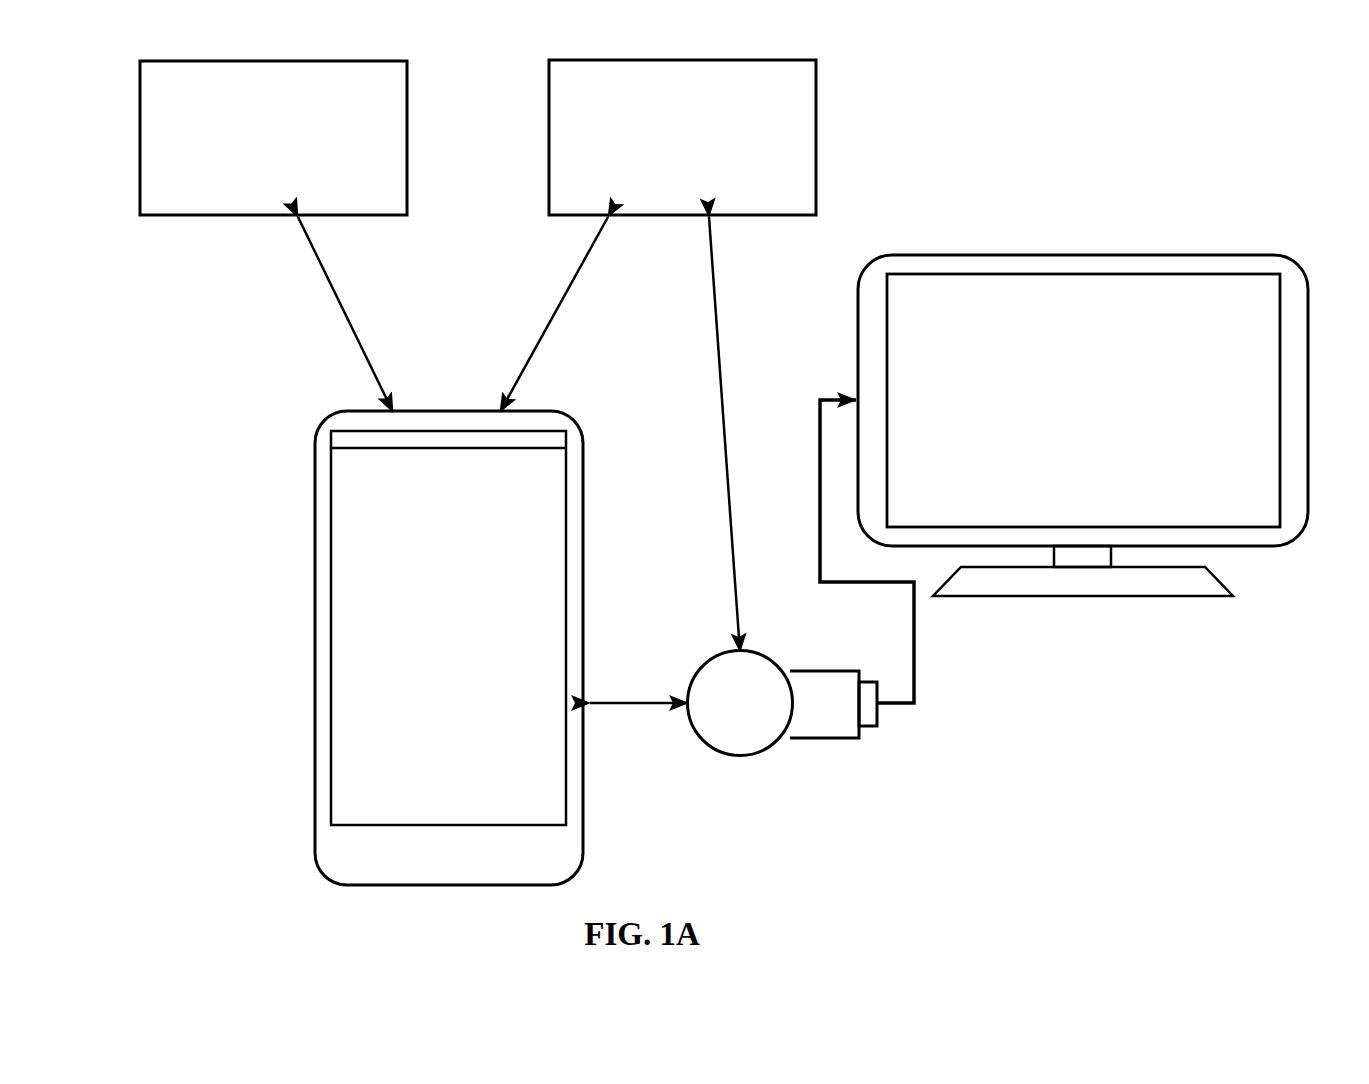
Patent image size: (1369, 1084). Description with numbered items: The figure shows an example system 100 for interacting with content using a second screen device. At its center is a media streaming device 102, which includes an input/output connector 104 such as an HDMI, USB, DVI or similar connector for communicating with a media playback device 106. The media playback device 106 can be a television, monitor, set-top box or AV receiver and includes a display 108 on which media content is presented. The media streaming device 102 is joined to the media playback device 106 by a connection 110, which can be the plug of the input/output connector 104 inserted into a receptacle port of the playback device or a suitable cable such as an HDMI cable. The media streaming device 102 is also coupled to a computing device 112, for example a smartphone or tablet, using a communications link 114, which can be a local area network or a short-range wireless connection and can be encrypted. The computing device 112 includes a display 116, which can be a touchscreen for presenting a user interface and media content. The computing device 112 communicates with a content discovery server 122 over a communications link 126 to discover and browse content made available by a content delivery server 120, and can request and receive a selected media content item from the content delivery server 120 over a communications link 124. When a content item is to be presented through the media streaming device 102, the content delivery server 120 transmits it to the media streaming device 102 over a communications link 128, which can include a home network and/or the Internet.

The system for interacting with content using a second screen device 100 is at (932, 88).
The media streaming device 102 is at (770, 772).
The input/output connector 104 is at (871, 728).
The media playback device 106 is at (1048, 422).
The display 108 is at (910, 348).
The connection 110 is at (916, 690).
The computing device 112 is at (424, 632).
The communications link 114 is at (676, 699).
The display 116 is at (360, 637).
The content delivery server 120 is at (547, 110).
The content discovery server 122 is at (138, 110).
The communications link 124 is at (560, 305).
The communications link 126 is at (343, 303).
The communications link 128 is at (718, 325).